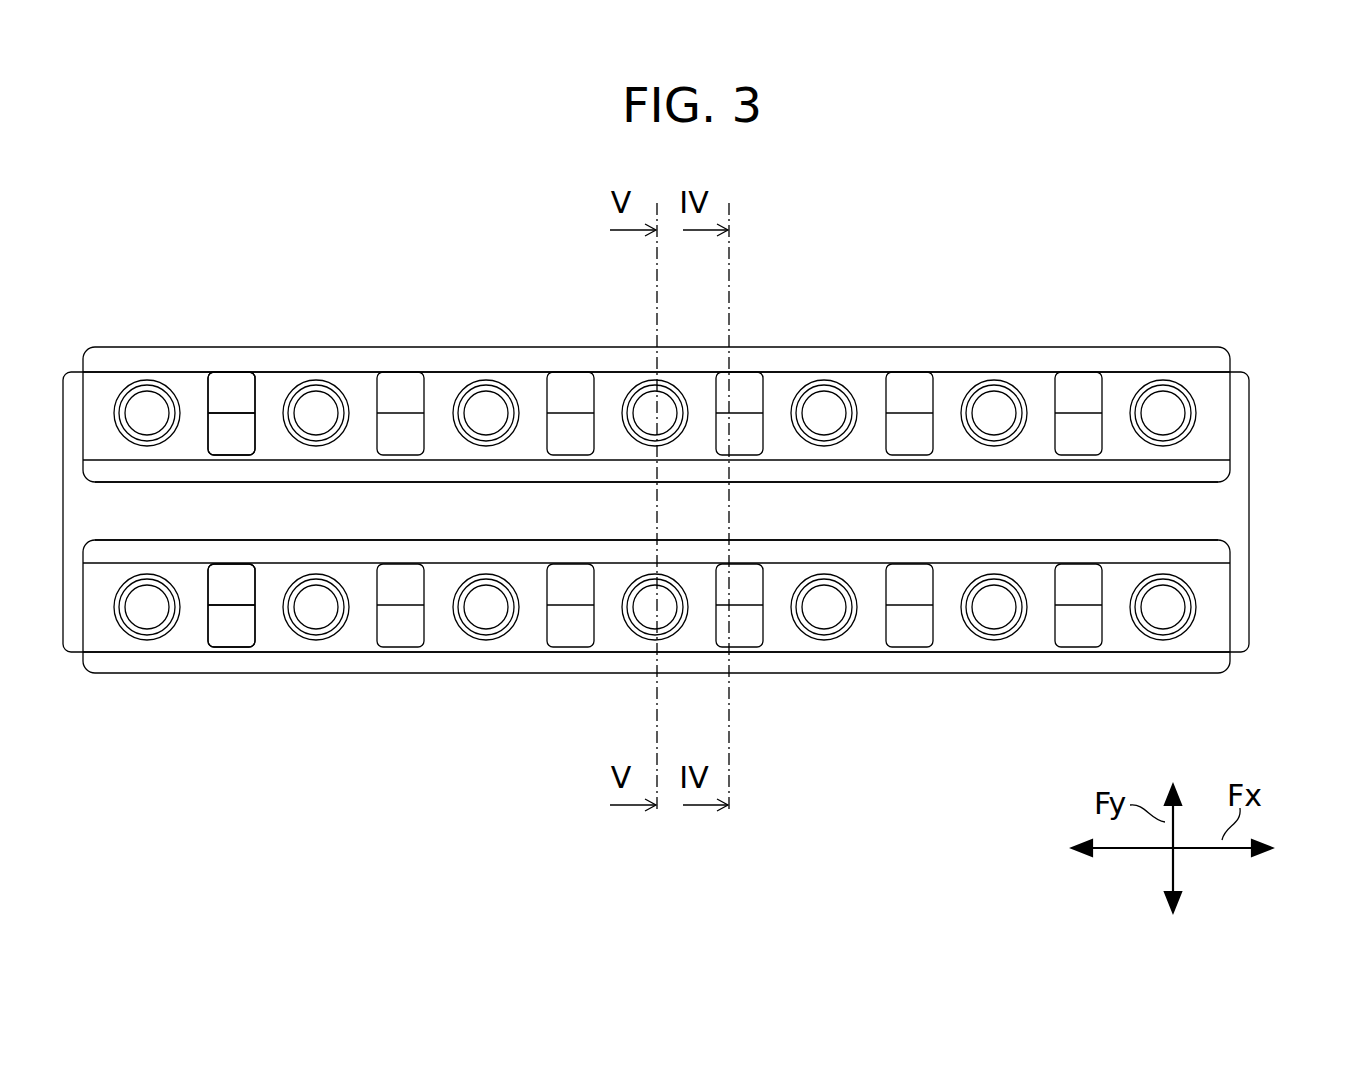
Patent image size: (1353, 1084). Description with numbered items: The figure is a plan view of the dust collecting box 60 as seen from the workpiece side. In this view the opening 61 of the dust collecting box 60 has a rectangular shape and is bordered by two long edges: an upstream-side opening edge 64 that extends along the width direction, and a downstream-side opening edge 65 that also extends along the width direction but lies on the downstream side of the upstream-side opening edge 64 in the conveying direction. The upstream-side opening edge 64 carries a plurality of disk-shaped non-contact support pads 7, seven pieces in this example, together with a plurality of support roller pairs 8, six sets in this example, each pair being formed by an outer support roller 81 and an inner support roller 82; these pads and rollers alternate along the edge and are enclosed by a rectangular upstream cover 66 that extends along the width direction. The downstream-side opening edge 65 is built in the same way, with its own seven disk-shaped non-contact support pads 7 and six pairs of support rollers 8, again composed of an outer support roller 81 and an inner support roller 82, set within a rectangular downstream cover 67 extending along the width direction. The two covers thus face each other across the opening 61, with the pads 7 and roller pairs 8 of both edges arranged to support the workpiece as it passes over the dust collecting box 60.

The dust collecting box 60 is at (1195, 213).
The opening 61 is at (798, 525).
The upstream-side opening edge 64 is at (1172, 487).
The downstream-side opening edge 65 is at (1172, 535).
The upstream cover 66 is at (1220, 410).
The downstream cover 67 is at (1222, 607).
The non-contact support pad 7 is at (147, 388).
The support roller pair 8 is at (399, 393).
The outer support roller 81 is at (245, 395).
The inner support roller 82 is at (233, 420).